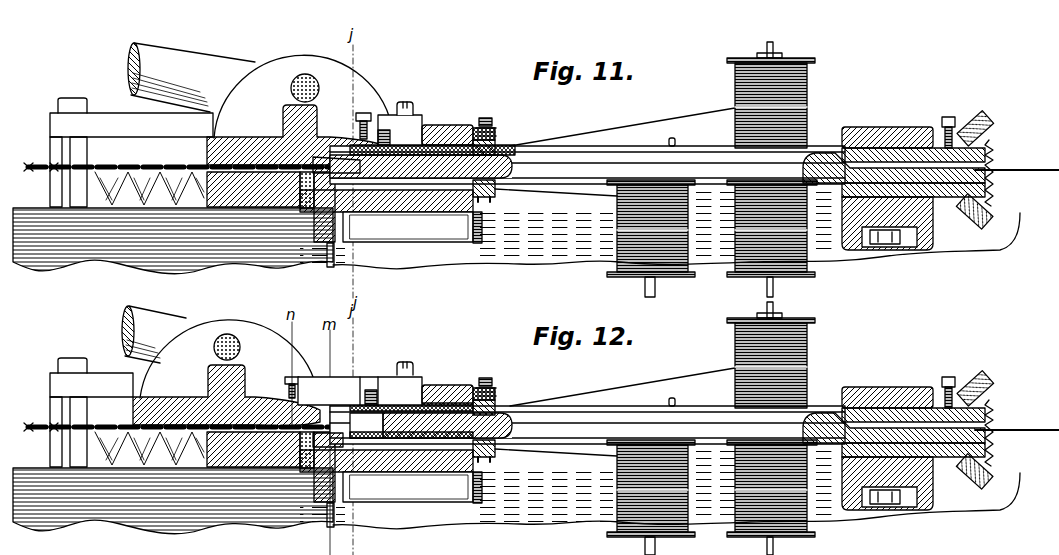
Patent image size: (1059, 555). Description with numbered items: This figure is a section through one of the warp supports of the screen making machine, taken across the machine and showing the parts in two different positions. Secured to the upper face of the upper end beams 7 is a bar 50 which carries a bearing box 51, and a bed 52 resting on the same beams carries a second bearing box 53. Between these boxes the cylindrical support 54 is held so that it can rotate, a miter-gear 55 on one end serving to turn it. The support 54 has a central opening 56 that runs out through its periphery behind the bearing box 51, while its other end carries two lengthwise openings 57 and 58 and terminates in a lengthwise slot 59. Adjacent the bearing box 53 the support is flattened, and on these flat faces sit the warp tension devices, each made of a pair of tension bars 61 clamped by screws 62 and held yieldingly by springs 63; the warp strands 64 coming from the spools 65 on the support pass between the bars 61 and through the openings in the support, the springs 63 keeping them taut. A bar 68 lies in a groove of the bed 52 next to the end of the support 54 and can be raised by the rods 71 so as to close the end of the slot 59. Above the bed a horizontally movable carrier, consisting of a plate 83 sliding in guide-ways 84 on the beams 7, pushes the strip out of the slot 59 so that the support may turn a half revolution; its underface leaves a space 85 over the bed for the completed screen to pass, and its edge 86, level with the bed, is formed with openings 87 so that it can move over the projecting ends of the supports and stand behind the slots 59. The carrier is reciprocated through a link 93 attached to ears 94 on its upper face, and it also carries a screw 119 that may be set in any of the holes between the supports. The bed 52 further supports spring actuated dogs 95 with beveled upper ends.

In FIG. 11, the upper end beams 7 is at (556, 256).
In FIG. 12, the upper end beams 7 is at (544, 518).
In FIG. 11, the bar 50 is at (927, 250).
In FIG. 12, the bar 50 is at (927, 510).
In FIG. 11, the box 51 is at (885, 130).
In FIG. 12, the box 51 is at (885, 390).
In FIG. 11, the bed 52 is at (418, 235).
In FIG. 12, the bed 52 is at (418, 495).
In FIG. 11, the box 53 is at (445, 119).
In FIG. 12, the box 53 is at (445, 379).
In FIG. 11, the support 54 is at (629, 163).
In FIG. 12, the support 54 is at (609, 423).
In FIG. 11, the miter-gear 55 is at (963, 118).
In FIG. 12, the miter-gear 55 is at (963, 378).
In FIG. 11, the central opening 56 is at (994, 172).
In FIG. 12, the central opening 56 is at (994, 432).
In FIG. 11, the opening 57 is at (464, 148).
In FIG. 12, the opening 57 is at (464, 408).
In FIG. 11, the opening 58 is at (452, 178).
In FIG. 12, the opening 58 is at (452, 438).
In FIG. 11, the lengthwise slot 59 is at (396, 133).
In FIG. 12, the lengthwise slot 59 is at (385, 395).
In FIG. 11, the tension bars 61 is at (497, 147).
In FIG. 12, the tension bars 61 is at (497, 407).
In FIG. 11, the screws 62 is at (492, 119).
In FIG. 12, the screws 62 is at (492, 379).
In FIG. 11, the springs 63 is at (496, 132).
In FIG. 12, the springs 63 is at (496, 392).
In FIG. 11, the warp strands 64 is at (569, 136).
In FIG. 12, the warp strands 64 is at (560, 398).
In FIG. 11, the spools 65 is at (808, 73).
In FIG. 12, the spools 65 is at (728, 332).
In FIG. 11, the bar 68 is at (340, 165).
In FIG. 12, the bar 68 is at (338, 425).
In FIG. 11, the rods 71 is at (352, 295).
In FIG. 12, the rods 71 is at (334, 545).
In FIG. 11, the plate 83 is at (243, 140).
In FIG. 12, the plate 83 is at (140, 400).
In FIG. 11, the guide-ways 84 is at (108, 121).
In FIG. 12, the guide-ways 84 is at (54, 388).
In FIG. 11, the space 85 is at (210, 163).
In FIG. 12, the space 85 is at (135, 423).
In FIG. 11, the edge 86 is at (415, 142).
In FIG. 12, the edge 86 is at (327, 354).
In FIG. 11, the openings 87 is at (385, 150).
In FIG. 12, the openings 87 is at (397, 418).
In FIG. 11, the link 93 is at (128, 67).
In FIG. 12, the link 93 is at (135, 306).
In FIG. 11, the ears 94 is at (330, 72).
In FIG. 12, the ears 94 is at (261, 330).
In FIG. 11, the spring actuated dogs 95 is at (300, 213).
In FIG. 12, the spring actuated dogs 95 is at (300, 473).
In FIG. 11, the screw 119 is at (362, 118).
In FIG. 12, the screw 119 is at (287, 377).